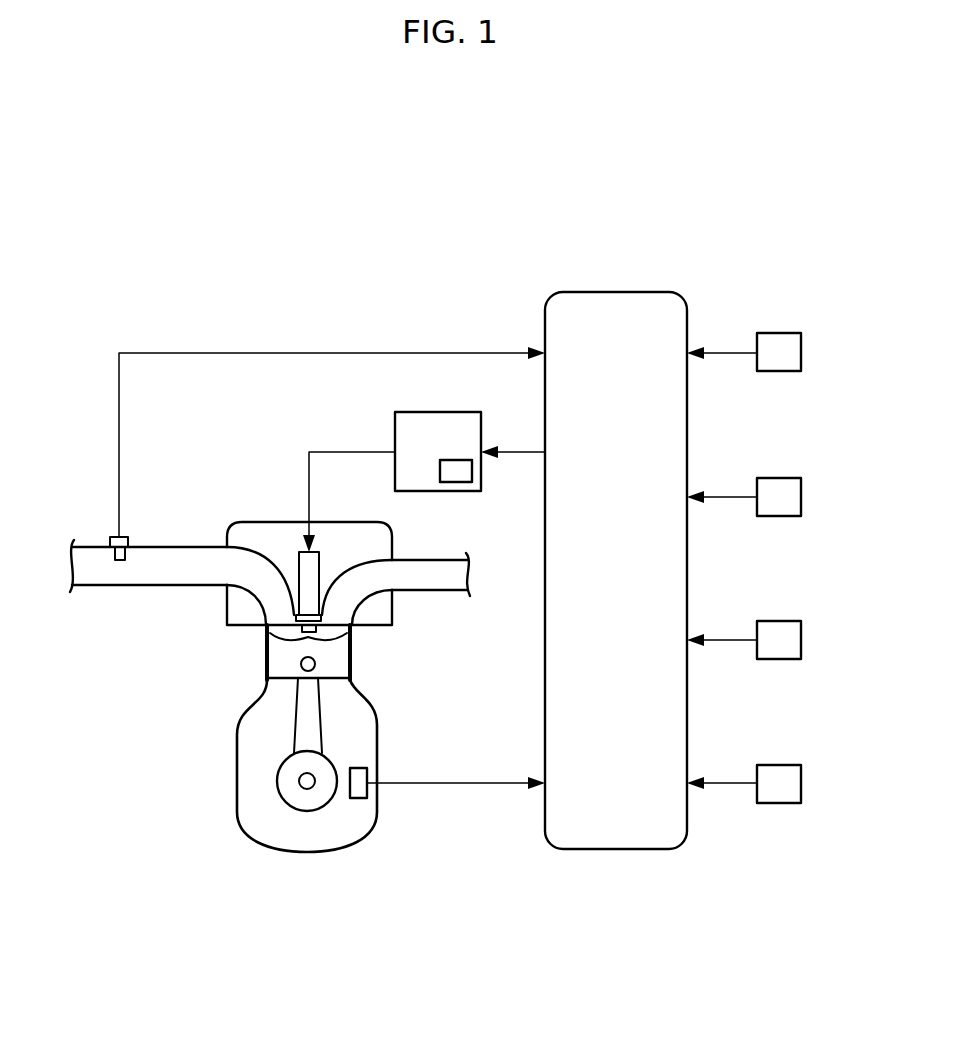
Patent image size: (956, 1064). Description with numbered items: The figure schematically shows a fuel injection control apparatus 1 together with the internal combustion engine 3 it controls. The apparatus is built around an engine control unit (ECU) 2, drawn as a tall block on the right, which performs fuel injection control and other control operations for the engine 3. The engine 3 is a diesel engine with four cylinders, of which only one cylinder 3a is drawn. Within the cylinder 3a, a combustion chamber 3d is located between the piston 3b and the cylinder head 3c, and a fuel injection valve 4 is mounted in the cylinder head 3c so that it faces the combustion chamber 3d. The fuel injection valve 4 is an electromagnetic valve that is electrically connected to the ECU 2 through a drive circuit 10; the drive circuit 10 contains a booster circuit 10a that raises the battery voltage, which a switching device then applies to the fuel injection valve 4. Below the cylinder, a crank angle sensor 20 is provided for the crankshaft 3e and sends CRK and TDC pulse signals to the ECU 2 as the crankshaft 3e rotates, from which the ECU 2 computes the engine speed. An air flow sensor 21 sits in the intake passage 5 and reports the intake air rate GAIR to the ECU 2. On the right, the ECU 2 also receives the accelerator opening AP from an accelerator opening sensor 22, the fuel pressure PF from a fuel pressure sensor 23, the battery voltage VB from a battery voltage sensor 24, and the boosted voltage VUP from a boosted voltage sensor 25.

The fuel injection control apparatus 1 is at (724, 226).
The engine control unit (ECU) 2 is at (622, 292).
The internal combustion engine 3 is at (224, 786).
The cylinder 3a is at (268, 655).
The piston 3b is at (345, 666).
The cylinder head 3c is at (263, 522).
The combustion chamber 3d is at (322, 632).
The crankshaft 3e is at (307, 783).
The fuel injection valve 4 is at (323, 552).
The intake passage 5 is at (152, 587).
The drive circuit 10 is at (424, 459).
The booster circuit 10a is at (458, 483).
The crank angle sensor 20 is at (358, 800).
The air flow sensor 21 is at (125, 537).
The accelerator opening sensor 22 is at (803, 347).
The fuel pressure sensor 23 is at (803, 491).
The battery voltage sensor 24 is at (803, 636).
The boosted voltage sensor 25 is at (803, 780).